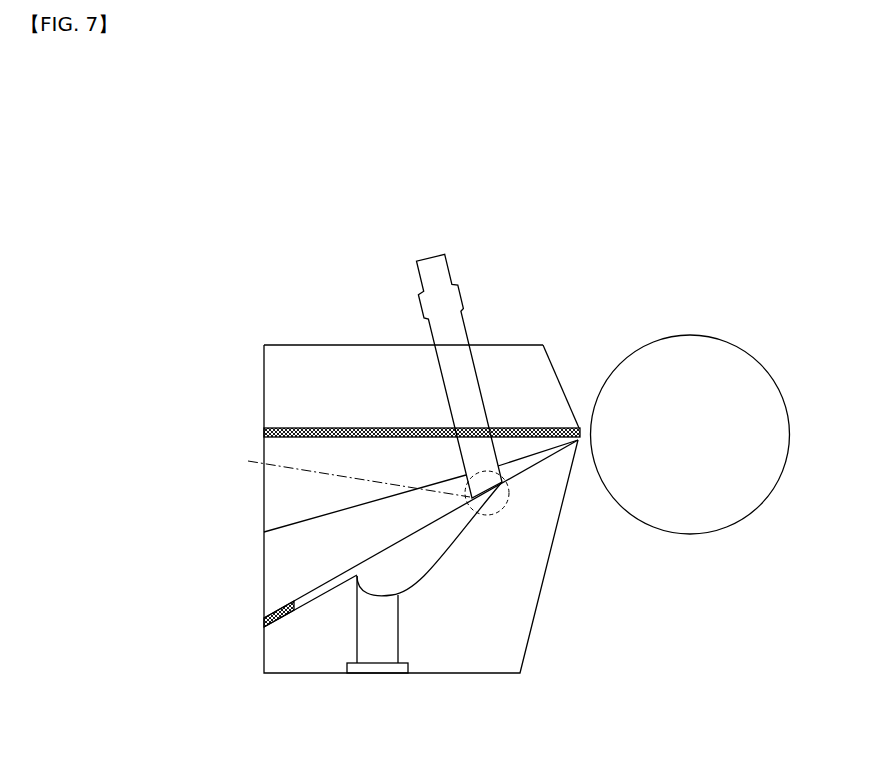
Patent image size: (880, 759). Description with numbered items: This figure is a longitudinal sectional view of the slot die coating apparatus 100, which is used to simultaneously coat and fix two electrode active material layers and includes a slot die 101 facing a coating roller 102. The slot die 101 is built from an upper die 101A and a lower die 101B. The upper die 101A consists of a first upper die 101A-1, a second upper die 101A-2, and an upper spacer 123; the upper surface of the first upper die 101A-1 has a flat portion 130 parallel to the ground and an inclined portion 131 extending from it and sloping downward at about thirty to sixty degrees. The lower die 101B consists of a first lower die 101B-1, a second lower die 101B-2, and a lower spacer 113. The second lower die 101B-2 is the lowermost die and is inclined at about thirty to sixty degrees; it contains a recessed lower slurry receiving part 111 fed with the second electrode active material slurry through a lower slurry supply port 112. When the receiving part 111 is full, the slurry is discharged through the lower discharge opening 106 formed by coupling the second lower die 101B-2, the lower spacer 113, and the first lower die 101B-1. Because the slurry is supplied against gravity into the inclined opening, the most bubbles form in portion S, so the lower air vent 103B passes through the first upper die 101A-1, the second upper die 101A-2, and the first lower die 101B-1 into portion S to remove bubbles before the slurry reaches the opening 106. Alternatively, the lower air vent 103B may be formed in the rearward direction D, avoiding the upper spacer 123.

The slot die coating apparatus 100 is at (429, 105).
The slot die 101 is at (88, 452).
The upper die 101A is at (157, 395).
The first upper die 101A-1 is at (268, 412).
The second upper die 101A-2 is at (268, 517).
The lower die 101B is at (157, 548).
The first lower die 101B-1 is at (268, 575).
The second lower die 101B-2 is at (268, 652).
The coating roller 102 is at (692, 350).
The lower air vent 103B is at (429, 265).
The lower discharge opening 106 is at (538, 466).
The lower slurry receiving part 111 is at (418, 563).
The lower slurry supply port 112 is at (375, 655).
The lower spacer 113 is at (283, 613).
The upper spacer 123 is at (310, 428).
The flat portion 130 is at (498, 343).
The inclined portion 131 is at (550, 355).
The rearward direction D is at (340, 472).
The portion S is at (497, 516).